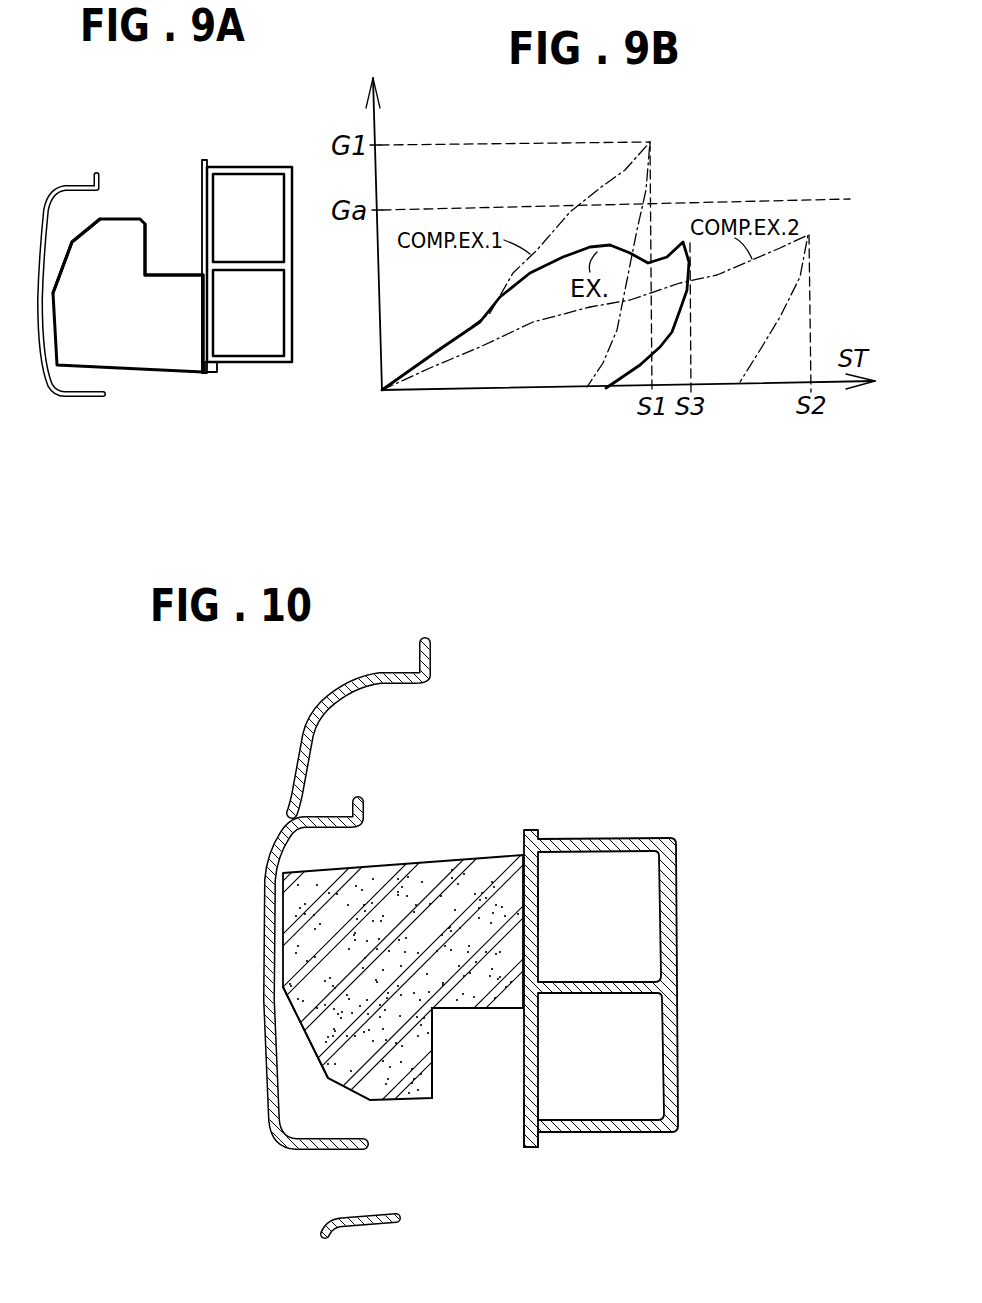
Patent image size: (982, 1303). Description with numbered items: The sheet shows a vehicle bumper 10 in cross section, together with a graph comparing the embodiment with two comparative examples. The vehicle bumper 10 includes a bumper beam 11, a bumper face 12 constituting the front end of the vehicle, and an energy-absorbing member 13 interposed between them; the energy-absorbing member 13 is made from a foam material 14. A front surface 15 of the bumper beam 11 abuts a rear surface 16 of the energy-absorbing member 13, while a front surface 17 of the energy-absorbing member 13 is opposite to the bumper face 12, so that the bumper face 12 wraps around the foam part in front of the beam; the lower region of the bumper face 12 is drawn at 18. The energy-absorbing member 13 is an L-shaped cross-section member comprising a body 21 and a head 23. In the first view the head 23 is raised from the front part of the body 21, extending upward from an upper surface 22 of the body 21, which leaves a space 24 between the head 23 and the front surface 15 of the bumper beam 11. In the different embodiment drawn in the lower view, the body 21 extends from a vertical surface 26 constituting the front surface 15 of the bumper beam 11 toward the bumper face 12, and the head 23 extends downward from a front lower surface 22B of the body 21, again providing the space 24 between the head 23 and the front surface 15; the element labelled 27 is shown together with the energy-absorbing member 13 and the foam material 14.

In FIG. 10, the vehicle bumper 10 is at (511, 768).
In FIG. 9A, the bumper beam 11 is at (248, 368).
In FIG. 10, the bumper beam 11 is at (615, 840).
In FIG. 9A, the bumper face 12 is at (65, 183).
In FIG. 10, the bumper face 12 is at (297, 762).
In FIG. 9A, the energy-absorbing member 13 is at (135, 264).
In FIG. 10, the energy-absorbing member 13 is at (380, 1007).
In FIG. 10, the foam material 14 is at (380, 1007).
In FIG. 9A, the front surface of the bumper beam 15 is at (202, 203).
In FIG. 10, the front surface of the bumper beam 15 is at (553, 1176).
In FIG. 10, the rear surface of the energy-absorbing member 16 is at (537, 905).
In FIG. 10, the front surface of the energy-absorbing member 17 is at (272, 921).
In FIG. 10, the panel lower portion 18 is at (272, 1012).
In FIG. 9A, the body 21 is at (118, 327).
In FIG. 10, the body 21 is at (417, 858).
In FIG. 9A, the upper surface of the body 22 is at (193, 270).
In FIG. 10, the front lower surface of the body 22B is at (498, 1008).
In FIG. 9A, the head 23 is at (112, 237).
In FIG. 10, the head 23 is at (373, 1057).
In FIG. 9A, the space 24 is at (170, 250).
In FIG. 10, the space 24 is at (463, 1067).
In FIG. 10, the vertical surface 26 is at (528, 1115).
In FIG. 10, the absorber attachment 27 is at (380, 1007).